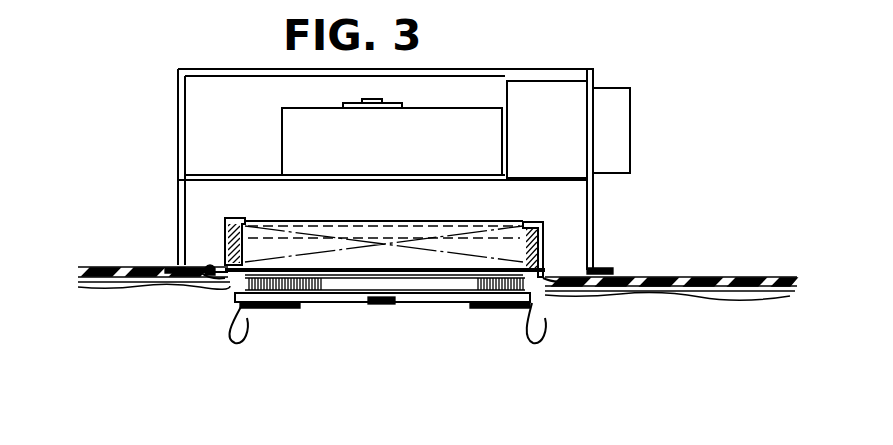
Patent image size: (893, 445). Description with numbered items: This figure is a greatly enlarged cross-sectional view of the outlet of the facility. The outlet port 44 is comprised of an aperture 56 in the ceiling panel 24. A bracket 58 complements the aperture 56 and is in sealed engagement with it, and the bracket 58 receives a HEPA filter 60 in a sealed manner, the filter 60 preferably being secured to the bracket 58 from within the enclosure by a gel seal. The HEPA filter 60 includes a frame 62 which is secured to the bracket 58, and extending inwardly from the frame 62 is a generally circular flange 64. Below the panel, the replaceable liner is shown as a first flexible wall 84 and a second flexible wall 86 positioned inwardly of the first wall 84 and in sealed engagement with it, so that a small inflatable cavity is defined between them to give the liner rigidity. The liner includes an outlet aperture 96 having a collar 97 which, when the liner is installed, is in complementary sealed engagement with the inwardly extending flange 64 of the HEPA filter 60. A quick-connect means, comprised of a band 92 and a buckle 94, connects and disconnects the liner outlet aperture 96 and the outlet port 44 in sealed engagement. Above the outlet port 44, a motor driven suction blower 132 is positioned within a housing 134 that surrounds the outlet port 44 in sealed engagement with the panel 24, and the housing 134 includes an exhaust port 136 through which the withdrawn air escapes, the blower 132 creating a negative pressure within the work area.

The ceiling panel 24 is at (655, 277).
The outlet port 44 is at (172, 324).
The aperture 56 is at (213, 285).
The bracket 58 is at (548, 280).
The HEPA filter 60 is at (350, 245).
The frame 62 is at (530, 225).
The flange 64 is at (472, 306).
The first flexible wall 84 is at (742, 279).
The second flexible wall 86 is at (702, 297).
The band 92 is at (315, 302).
The buckle 94 is at (383, 304).
The outlet aperture 96 is at (248, 322).
The collar 97 is at (543, 322).
The motor driven suction blower 132 is at (388, 149).
The housing 134 is at (593, 222).
The exhaust port 136 is at (630, 120).